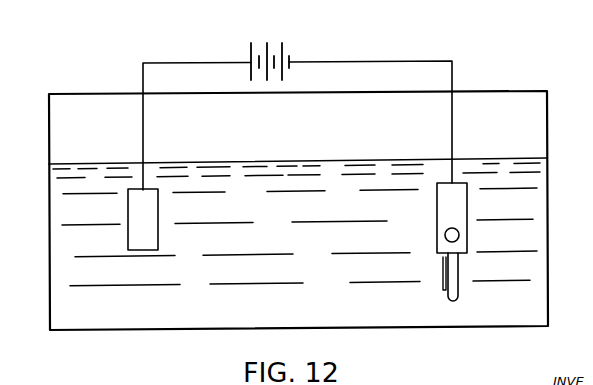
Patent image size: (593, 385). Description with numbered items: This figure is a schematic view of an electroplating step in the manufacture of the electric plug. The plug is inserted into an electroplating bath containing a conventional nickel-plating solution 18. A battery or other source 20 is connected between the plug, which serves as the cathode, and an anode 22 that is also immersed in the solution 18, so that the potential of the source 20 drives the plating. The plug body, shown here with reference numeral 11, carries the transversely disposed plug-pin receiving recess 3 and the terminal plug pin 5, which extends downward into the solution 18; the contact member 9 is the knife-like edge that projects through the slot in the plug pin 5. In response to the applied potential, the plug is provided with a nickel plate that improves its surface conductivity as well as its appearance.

The battery or other source 20 is at (283, 48).
The nickel-plating solution 18 is at (355, 177).
The anode 22 is at (150, 216).
The electrode housing 11 is at (467, 212).
The plug-pin receiving recess 3 is at (459, 235).
The terminal plug pin 5 is at (458, 272).
The contact member 9 is at (443, 270).